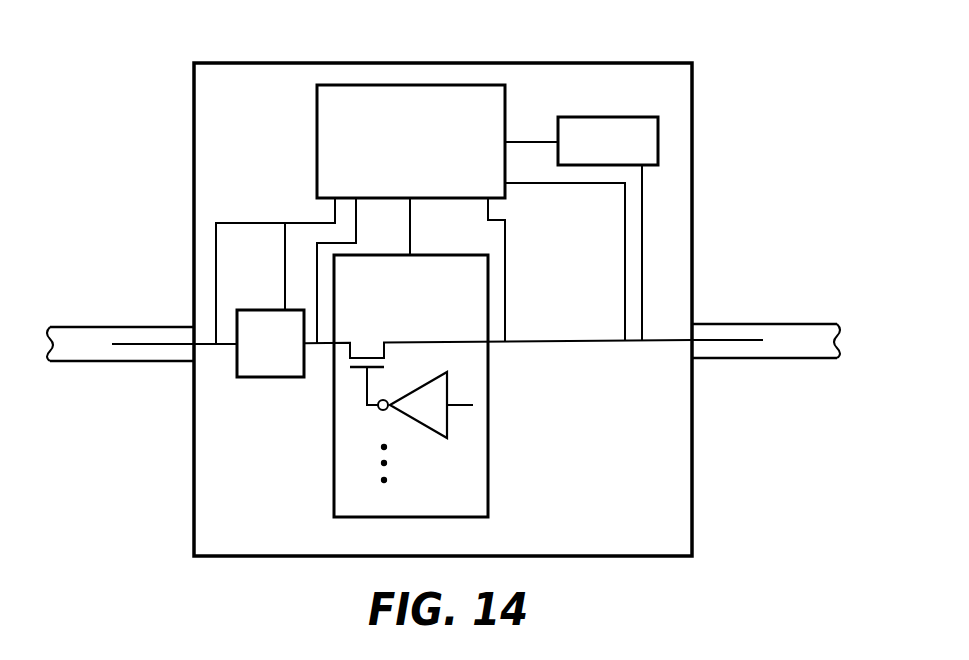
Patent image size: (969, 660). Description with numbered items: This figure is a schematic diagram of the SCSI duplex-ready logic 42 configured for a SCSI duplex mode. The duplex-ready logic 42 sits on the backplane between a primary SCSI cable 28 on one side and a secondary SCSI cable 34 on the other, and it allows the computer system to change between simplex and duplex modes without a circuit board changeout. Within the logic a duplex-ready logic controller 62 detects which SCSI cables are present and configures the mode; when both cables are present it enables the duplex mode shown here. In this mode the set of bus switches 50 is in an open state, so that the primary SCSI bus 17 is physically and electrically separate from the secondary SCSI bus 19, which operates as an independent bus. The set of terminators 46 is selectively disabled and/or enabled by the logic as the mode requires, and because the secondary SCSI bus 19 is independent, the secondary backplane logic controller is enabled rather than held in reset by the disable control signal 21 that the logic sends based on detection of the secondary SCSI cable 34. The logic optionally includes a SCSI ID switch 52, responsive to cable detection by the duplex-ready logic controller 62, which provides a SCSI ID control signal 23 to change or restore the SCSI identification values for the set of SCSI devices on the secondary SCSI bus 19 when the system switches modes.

The SCSI duplex-ready logic 42 is at (480, 62).
The duplex-ready logic controller 62 is at (507, 95).
The SCSI identification switch 52 is at (627, 117).
The secondary SCSI backplane logic controller disable control signal 21 is at (533, 183).
The secondary SCSI ID control signal 23 is at (642, 233).
The bus switches 50 is at (427, 255).
The terminators 46 is at (267, 378).
The primary SCSI cable 28 is at (75, 364).
The primary SCSI bus 17 is at (148, 348).
The secondary SCSI bus 19 is at (737, 342).
The secondary SCSI cable 34 is at (812, 358).